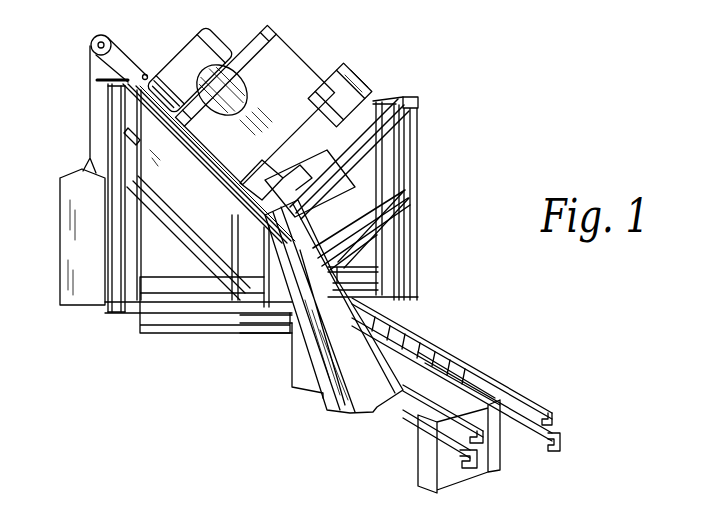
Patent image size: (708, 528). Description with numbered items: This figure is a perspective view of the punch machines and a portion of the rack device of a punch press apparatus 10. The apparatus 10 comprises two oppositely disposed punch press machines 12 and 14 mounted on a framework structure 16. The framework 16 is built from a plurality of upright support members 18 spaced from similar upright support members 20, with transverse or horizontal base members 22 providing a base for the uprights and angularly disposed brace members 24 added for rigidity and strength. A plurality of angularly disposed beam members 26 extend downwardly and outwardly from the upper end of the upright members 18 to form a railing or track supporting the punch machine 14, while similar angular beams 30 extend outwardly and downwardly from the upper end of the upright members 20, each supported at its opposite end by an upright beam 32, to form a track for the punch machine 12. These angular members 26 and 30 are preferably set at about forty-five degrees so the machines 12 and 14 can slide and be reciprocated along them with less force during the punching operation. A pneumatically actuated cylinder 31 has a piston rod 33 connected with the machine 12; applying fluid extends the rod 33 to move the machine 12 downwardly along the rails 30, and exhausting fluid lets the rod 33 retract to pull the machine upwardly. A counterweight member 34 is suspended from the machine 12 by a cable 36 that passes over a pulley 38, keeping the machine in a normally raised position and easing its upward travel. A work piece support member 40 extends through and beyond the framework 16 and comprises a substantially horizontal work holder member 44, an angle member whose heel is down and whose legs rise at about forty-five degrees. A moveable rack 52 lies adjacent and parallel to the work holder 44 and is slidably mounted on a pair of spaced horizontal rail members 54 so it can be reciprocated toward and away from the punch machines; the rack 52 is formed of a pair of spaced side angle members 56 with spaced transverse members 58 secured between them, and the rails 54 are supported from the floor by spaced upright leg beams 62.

The punch press apparatus 10 is at (374, 94).
The punch press machine 12 is at (270, 90).
The punch press machine 14 is at (368, 100).
The framework structure 16 is at (405, 213).
The upright support members 18 is at (404, 236).
The upright support members 20 is at (117, 290).
The horizontal base members 22 is at (388, 290).
The brace members 24 is at (198, 305).
The angularly disposed beam members 26 is at (398, 100).
The angularly disposed beams 30 is at (127, 82).
The pneumatically actuated cylinder 31 is at (128, 134).
The upright beam 32 is at (232, 227).
The piston rod 33 is at (153, 162).
The counterweight member 34 is at (72, 247).
The cable 36 is at (90, 96).
The pulley 38 is at (99, 35).
The work piece support member 40 is at (290, 261).
The work holder member 44 is at (300, 223).
The moveable rack 52 is at (496, 372).
The rail members 54 is at (560, 430).
The side angle members 56 is at (520, 393).
The transverse members 58 is at (458, 353).
The upright leg beams 62 is at (427, 440).